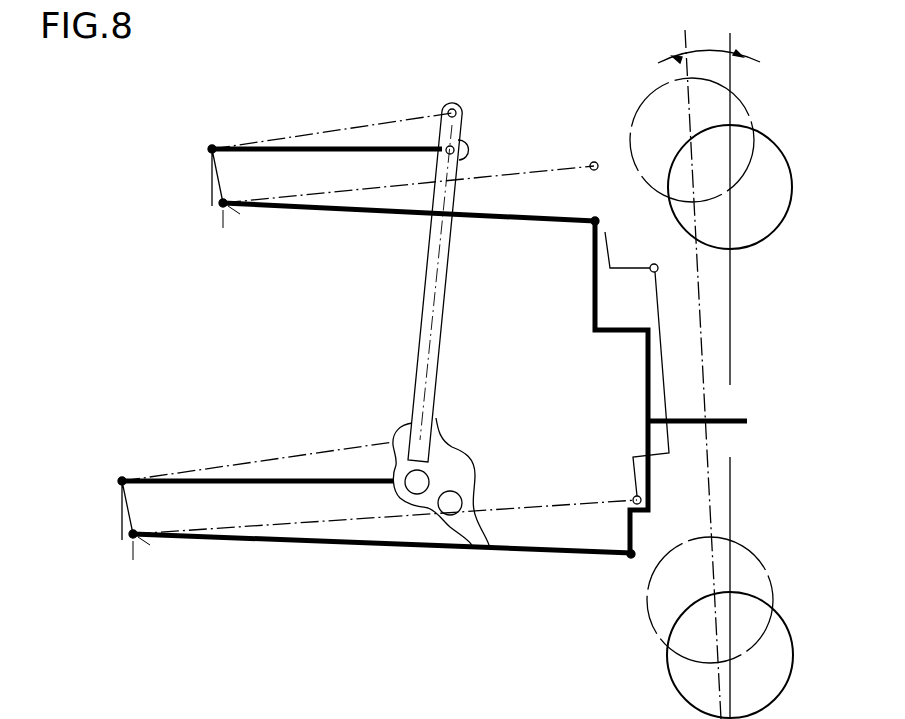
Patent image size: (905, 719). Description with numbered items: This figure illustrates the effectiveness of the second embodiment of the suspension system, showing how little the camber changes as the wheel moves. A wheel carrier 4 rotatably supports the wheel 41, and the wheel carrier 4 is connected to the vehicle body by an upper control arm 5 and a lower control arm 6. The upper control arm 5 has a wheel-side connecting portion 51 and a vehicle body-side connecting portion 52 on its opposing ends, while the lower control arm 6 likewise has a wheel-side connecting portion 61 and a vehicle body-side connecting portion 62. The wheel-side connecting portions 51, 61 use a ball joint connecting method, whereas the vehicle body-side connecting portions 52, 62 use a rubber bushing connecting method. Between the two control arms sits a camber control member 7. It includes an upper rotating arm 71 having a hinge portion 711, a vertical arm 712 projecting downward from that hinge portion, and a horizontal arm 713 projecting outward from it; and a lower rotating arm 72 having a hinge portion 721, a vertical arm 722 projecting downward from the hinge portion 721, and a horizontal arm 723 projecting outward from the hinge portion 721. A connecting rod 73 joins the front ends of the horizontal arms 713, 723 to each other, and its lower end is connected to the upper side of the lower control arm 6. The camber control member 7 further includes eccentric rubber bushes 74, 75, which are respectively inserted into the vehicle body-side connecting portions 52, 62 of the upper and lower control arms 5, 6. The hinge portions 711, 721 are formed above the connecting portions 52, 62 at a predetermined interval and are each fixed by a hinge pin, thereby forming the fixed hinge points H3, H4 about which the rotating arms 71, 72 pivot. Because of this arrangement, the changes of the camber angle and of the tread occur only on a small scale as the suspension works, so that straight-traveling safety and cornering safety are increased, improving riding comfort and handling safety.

The wheel carrier 4 is at (648, 370).
The wheel 41 is at (775, 190).
The upper control arm 5 is at (345, 215).
The connecting portion 51 is at (600, 220).
The connecting portion 52 is at (219, 207).
The fixed hinge point H3 is at (221, 212).
The eccentric rubber bush 74 is at (230, 207).
The upper rotating arm 71 is at (287, 136).
The hinge portion 711 is at (212, 145).
The vertical arm 712 is at (210, 174).
The horizontal arm 713 is at (355, 147).
The connecting rod 73 is at (442, 292).
The camber control member 7 is at (458, 345).
The lower control arm 6 is at (337, 546).
The connecting portion 61 is at (627, 562).
The connecting portion 62 is at (129, 539).
The fixed hinge point H4 is at (130, 543).
The eccentric rubber bush 75 is at (140, 539).
The lower rotating arm 72 is at (205, 472).
The hinge portion 721 is at (120, 478).
The vertical arm 722 is at (120, 504).
The horizontal arm 723 is at (297, 477).